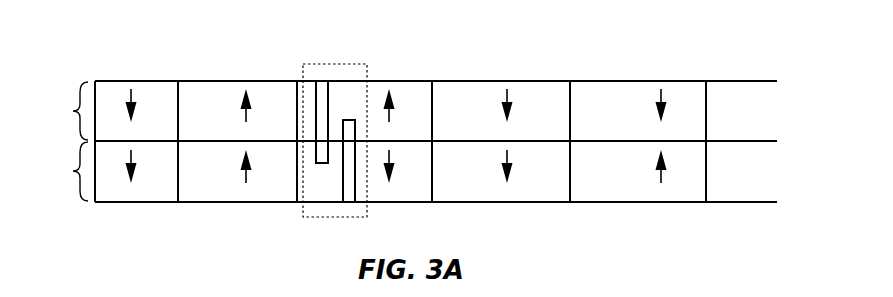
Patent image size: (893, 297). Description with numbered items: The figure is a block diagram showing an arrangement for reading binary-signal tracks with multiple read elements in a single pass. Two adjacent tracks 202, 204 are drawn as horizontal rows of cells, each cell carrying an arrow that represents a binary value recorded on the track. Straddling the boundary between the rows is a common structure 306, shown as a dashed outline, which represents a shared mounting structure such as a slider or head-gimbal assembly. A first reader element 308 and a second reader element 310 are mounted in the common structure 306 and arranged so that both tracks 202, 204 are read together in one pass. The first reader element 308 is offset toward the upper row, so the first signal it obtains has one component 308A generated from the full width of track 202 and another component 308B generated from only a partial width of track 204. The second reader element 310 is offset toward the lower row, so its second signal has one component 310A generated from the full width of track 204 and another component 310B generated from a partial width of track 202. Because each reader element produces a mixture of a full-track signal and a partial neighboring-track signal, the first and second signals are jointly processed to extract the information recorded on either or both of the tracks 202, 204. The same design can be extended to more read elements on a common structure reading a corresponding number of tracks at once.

The track 202 is at (350, 111).
The track 204 is at (350, 171).
The common structure 306 is at (335, 64).
The first reader element 308 is at (323, 100).
The component of first signal 308A is at (318, 80).
The component of first signal 308B is at (322, 165).
The second reader element 310 is at (353, 185).
The component of second signal 310A is at (348, 192).
The component of second signal 310B is at (348, 123).